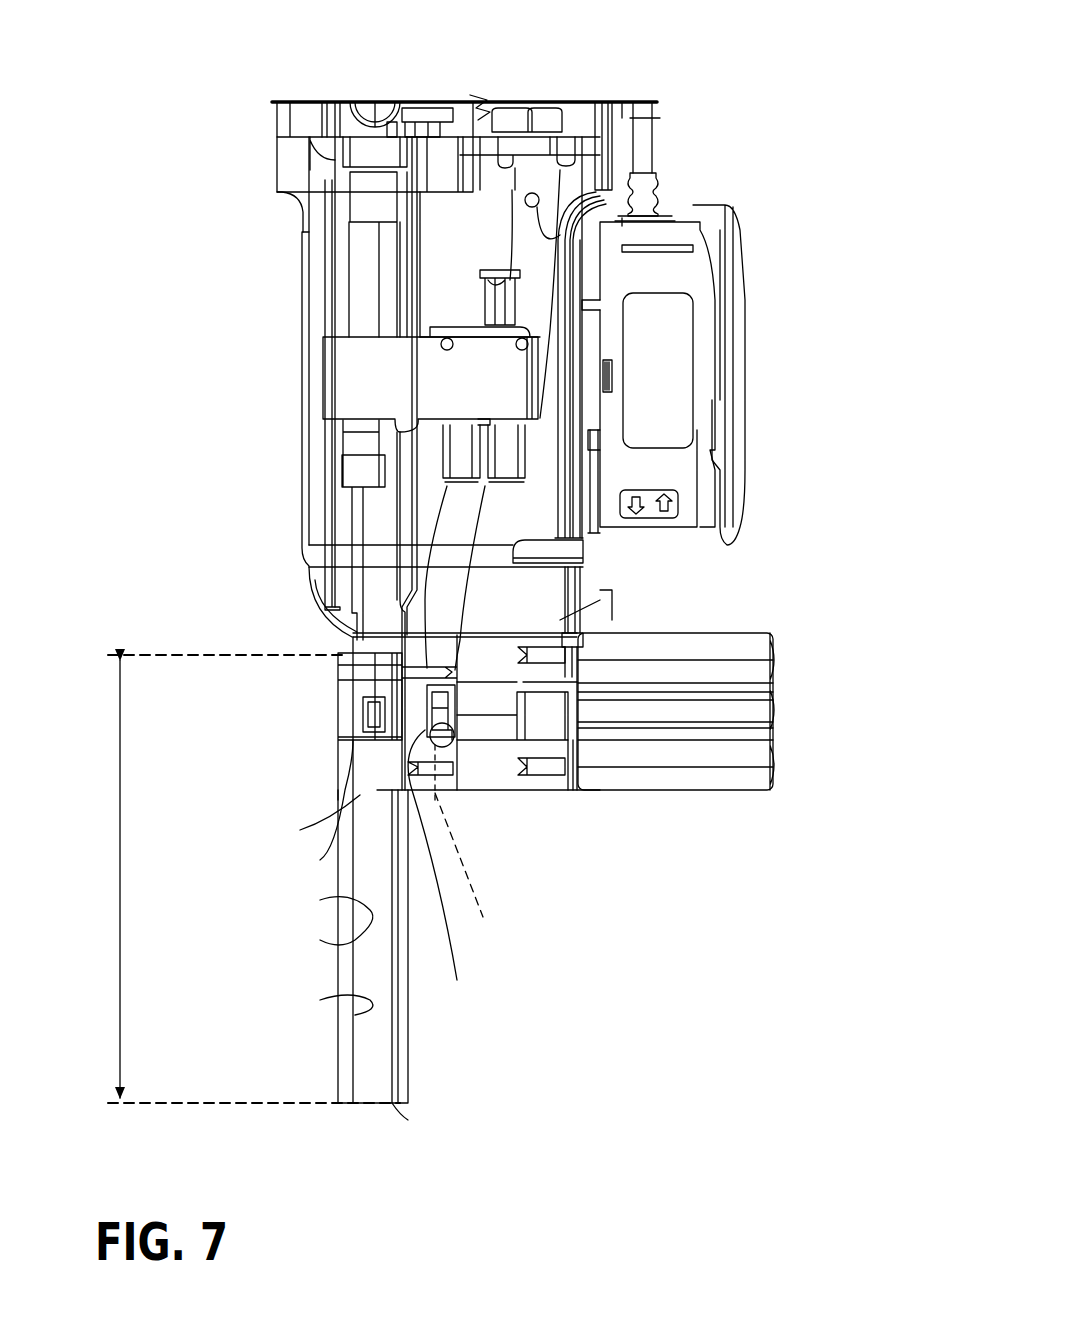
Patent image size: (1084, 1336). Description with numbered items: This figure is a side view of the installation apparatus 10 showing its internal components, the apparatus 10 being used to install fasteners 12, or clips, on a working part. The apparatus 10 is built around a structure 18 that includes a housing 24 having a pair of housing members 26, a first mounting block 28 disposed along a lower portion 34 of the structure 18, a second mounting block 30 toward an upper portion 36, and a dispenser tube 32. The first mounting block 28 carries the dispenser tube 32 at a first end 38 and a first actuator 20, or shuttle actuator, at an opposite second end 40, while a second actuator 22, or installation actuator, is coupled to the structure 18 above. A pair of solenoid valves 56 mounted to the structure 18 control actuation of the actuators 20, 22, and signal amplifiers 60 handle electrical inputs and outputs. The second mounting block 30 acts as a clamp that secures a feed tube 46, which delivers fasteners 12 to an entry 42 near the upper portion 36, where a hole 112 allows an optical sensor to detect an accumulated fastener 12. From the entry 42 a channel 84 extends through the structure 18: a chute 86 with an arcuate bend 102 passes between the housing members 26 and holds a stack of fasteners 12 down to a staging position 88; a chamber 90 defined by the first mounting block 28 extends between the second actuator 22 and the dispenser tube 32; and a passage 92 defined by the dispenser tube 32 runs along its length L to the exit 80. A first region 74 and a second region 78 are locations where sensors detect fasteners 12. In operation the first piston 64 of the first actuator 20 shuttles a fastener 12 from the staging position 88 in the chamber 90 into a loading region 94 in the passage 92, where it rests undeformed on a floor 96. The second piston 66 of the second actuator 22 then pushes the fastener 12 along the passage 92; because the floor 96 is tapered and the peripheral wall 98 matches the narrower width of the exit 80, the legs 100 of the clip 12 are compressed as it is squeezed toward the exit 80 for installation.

The installation apparatus 10 is at (840, 92).
The fastener 12 is at (350, 718).
The structure 18 is at (690, 607).
The first actuator 20 is at (678, 790).
The second actuator 22 is at (270, 168).
The housing 24 is at (294, 330).
The housing members 26 is at (318, 531).
The first mounting block 28 is at (522, 780).
The second mounting block 30 is at (580, 120).
The dispenser tube 32 is at (345, 900).
The lower portion 34 is at (318, 670).
The upper portion 36 is at (625, 138).
The first end 38 is at (402, 787).
The second end 40 is at (570, 790).
The entry 42 is at (541, 137).
The feed tube 46 is at (505, 148).
The first solenoid valve 56 is at (360, 410).
The signal amplifiers 60 is at (655, 437).
The first piston 64 is at (547, 707).
The second piston 66 is at (368, 272).
The first region 74 is at (467, 874).
The second region 78 is at (672, 222).
The exit 80 is at (405, 1105).
The channel 84 is at (486, 506).
The chute 86 is at (430, 598).
The staging position 88 is at (464, 670).
The chamber 90 is at (493, 726).
The passage 92 is at (370, 992).
The loading region 94 is at (372, 690).
The floor 96 is at (340, 745).
The peripheral wall 98 is at (365, 915).
The legs 100 is at (444, 876).
The arcuate bend 102 is at (630, 325).
The hole 112 is at (538, 200).
The length L is at (115, 874).